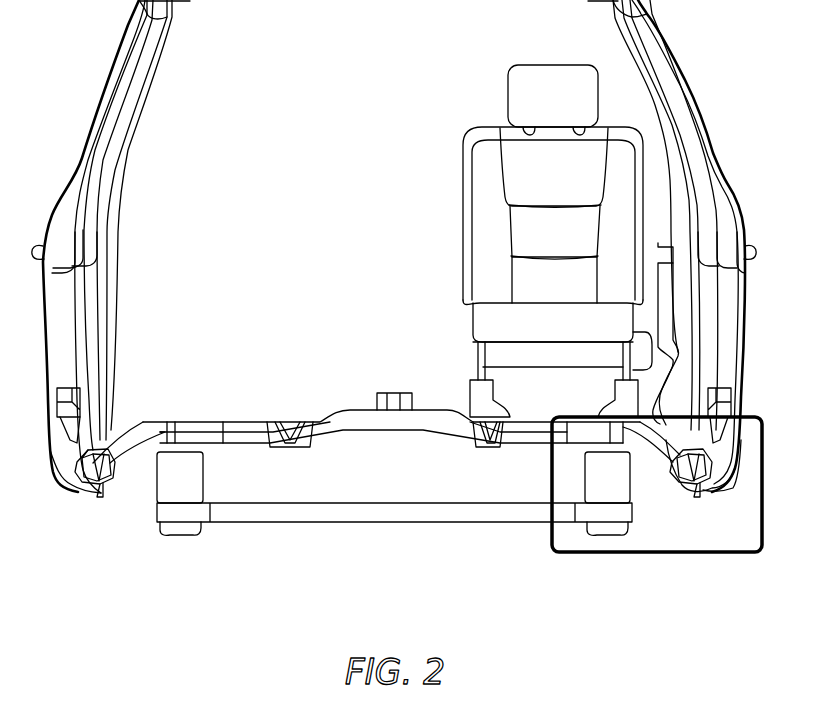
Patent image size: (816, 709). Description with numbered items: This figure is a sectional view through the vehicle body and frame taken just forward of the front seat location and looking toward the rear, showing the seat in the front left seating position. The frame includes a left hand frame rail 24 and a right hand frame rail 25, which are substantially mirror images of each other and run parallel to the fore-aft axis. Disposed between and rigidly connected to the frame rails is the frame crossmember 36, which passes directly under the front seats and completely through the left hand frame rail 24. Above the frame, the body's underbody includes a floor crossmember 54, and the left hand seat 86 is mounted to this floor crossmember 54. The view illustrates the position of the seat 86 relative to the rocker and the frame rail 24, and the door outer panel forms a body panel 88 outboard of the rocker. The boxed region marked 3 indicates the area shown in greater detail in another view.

The detail region shown in FIG. 3 is at (553, 552).
The left hand frame rail 24 is at (630, 527).
The right hand frame rail 25 is at (157, 483).
The frame crossmember 36 is at (308, 523).
The floor crossmember 54 is at (323, 412).
The left hand seat 86 is at (462, 193).
The body panel 88 is at (733, 488).